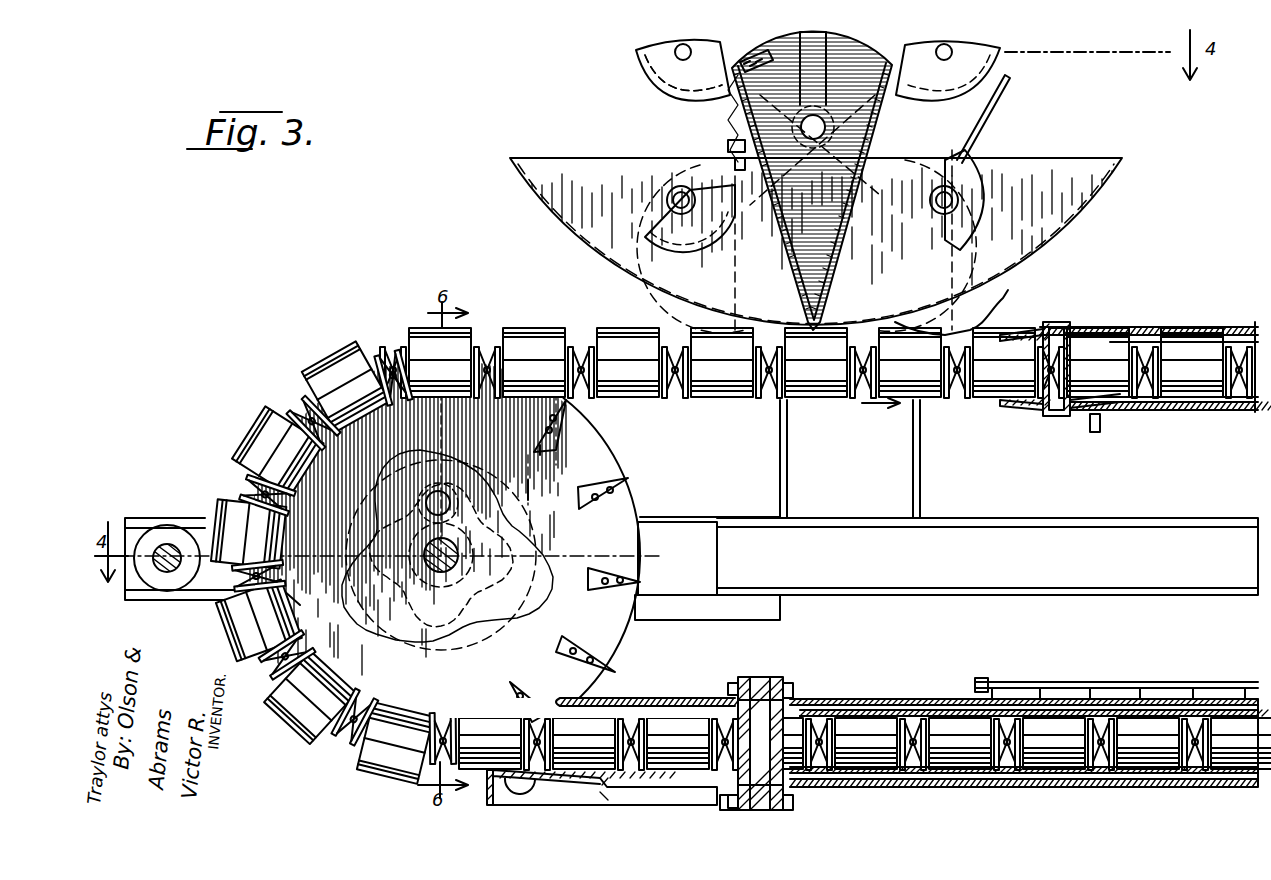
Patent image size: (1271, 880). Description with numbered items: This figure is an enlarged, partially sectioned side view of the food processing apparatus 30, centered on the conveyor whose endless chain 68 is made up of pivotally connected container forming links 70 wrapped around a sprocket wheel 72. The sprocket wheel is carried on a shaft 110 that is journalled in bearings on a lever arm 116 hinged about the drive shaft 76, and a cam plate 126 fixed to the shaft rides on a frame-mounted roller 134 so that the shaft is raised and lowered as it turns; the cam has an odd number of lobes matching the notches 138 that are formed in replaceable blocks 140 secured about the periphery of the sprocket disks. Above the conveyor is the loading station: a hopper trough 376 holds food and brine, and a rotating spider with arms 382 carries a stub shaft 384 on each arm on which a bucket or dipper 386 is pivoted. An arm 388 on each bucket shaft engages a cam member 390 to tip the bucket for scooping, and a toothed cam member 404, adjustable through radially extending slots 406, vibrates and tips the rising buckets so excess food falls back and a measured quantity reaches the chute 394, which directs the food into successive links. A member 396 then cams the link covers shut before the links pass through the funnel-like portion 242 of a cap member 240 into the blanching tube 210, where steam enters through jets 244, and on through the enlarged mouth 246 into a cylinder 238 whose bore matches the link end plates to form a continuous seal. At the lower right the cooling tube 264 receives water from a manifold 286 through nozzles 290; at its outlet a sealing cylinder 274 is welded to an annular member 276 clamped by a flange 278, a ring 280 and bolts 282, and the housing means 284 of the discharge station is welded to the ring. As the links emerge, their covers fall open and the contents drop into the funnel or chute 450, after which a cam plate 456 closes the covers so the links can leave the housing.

The conveyor chain 30 is at (741, 519).
The endless chain 68 is at (270, 405).
The container forming links 70 is at (525, 345).
The sprocket wheel 72 is at (622, 519).
The drive shaft 76 is at (167, 552).
The shaft 110 is at (452, 553).
The lever arm 116 is at (284, 592).
The cam plate 126 is at (525, 560).
The roller 134 is at (528, 490).
The notches 138 is at (590, 402).
The blocks 140 is at (540, 447).
The tube 210 is at (1212, 327).
The cylinder 238 is at (1245, 325).
The cap member 240 is at (1058, 414).
The funnel-like portion 242 is at (1018, 408).
The jets 244 is at (1102, 426).
The enlarged mouth 246 is at (1150, 408).
The tube 264 is at (856, 700).
The sealing cylinder 274 is at (810, 714).
The annular member 276 is at (758, 678).
The flange 278 is at (777, 682).
The ring 280 is at (745, 680).
The bolts 282 is at (728, 689).
The housing means 284 is at (628, 698).
The manifold 286 is at (1105, 683).
The nozzles 290 is at (1040, 690).
The hopper trough 376 is at (1086, 215).
The arms 382 is at (700, 178).
The stub shaft 384 is at (672, 50).
The bucket or dipper 386 is at (640, 87).
The arm 388 is at (925, 150).
The cam member 390 is at (985, 128).
The chute 394 is at (810, 240).
The member 396 is at (990, 292).
The toothed cam member 404 is at (732, 141).
The radially extending slots 406 is at (728, 147).
The funnel or chute 450 is at (584, 743).
The cam plate 456 is at (500, 760).